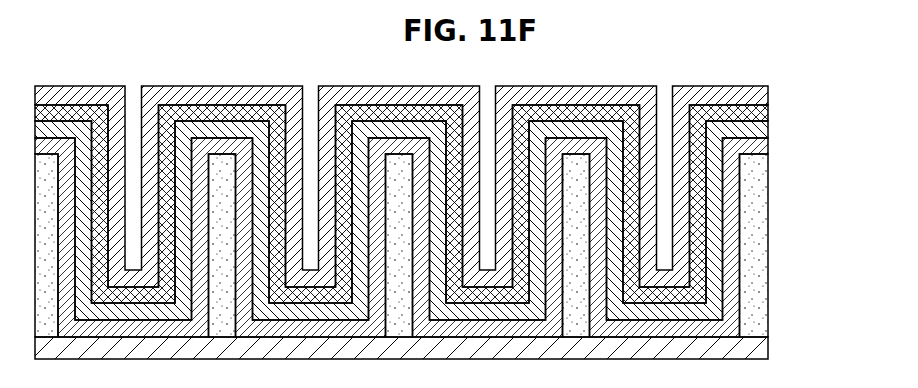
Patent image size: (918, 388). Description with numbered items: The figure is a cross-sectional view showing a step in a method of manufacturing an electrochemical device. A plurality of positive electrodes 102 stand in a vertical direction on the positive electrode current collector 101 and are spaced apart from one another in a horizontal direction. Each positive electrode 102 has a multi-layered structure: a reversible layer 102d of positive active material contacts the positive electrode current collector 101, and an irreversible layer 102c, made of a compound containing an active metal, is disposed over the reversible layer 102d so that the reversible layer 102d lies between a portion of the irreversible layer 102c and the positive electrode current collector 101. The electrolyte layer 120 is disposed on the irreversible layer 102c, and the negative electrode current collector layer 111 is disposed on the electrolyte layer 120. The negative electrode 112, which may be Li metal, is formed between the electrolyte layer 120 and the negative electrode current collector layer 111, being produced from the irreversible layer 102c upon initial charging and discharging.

The positive electrode current collector 101 is at (758, 348).
The positive electrode 102 is at (474, 237).
The irreversible layer 102c is at (768, 148).
The reversible layer 102d is at (762, 223).
The negative electrode current collector layer 111 is at (768, 93).
The negative electrode 112 is at (768, 113).
The electrolyte layer 120 is at (768, 131).